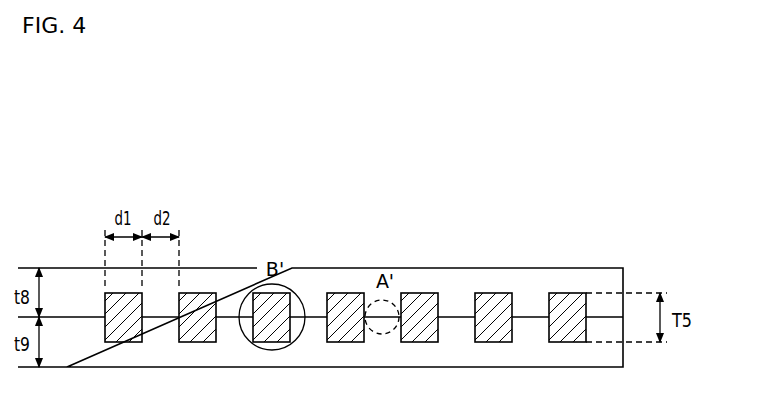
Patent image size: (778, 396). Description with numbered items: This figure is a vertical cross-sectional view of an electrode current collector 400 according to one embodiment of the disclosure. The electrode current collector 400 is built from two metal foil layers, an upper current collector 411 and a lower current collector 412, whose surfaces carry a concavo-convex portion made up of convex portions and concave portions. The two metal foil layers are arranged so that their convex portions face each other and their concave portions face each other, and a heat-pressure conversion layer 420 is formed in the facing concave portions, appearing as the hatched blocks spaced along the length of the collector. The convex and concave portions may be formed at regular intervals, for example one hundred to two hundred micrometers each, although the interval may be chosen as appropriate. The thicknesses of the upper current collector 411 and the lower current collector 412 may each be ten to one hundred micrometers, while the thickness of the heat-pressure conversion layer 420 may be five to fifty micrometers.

The electrode current collector 400 is at (300, 196).
The upper current collector 411 is at (623, 273).
The lower current collector 412 is at (623, 357).
The heat-pressure conversion layer 420 is at (568, 294).